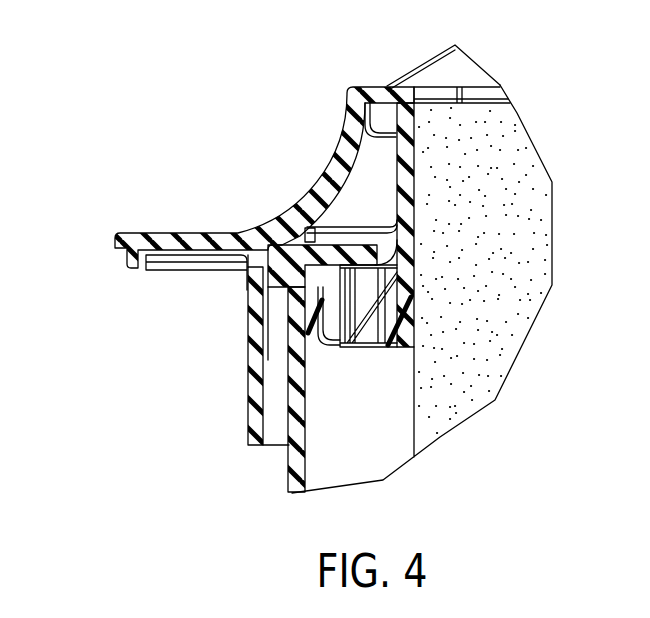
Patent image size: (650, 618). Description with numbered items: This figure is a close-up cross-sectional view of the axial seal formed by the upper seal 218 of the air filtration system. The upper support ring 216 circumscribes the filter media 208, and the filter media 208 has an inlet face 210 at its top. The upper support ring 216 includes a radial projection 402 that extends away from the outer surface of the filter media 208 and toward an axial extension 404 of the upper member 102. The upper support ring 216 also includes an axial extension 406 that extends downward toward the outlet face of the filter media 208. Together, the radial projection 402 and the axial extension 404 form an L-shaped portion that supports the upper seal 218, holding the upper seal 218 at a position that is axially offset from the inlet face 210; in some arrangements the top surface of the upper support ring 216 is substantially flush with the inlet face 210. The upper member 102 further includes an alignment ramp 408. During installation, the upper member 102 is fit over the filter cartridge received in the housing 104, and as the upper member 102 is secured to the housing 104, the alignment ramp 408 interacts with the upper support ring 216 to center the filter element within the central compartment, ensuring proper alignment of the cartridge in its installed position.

The upper member 102 is at (337, 181).
The housing 104 is at (292, 473).
The filter media 208 is at (538, 262).
The inlet face 210 is at (488, 102).
The upper support ring 216 is at (368, 165).
The upper seal 218 is at (250, 292).
The radial projection 402 is at (308, 227).
The axial extension 404 is at (250, 358).
The axial extension 406 is at (332, 343).
The alignment ramp 408 is at (372, 138).